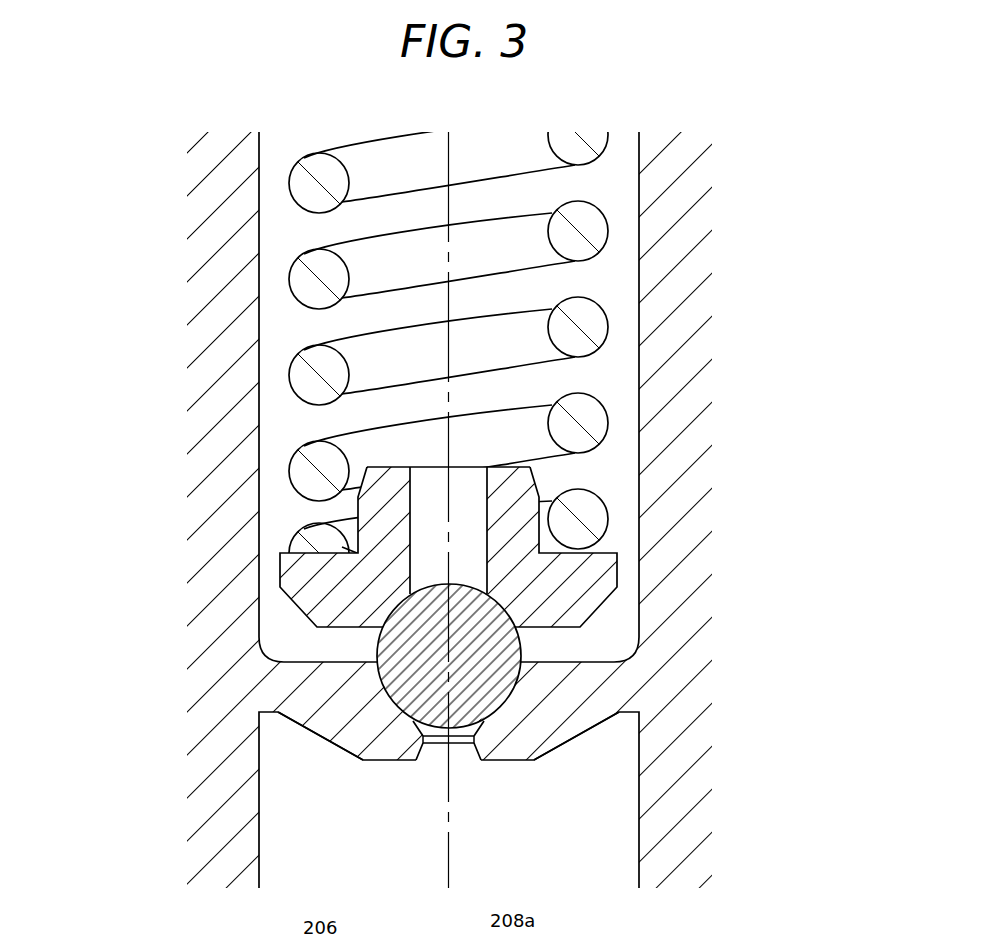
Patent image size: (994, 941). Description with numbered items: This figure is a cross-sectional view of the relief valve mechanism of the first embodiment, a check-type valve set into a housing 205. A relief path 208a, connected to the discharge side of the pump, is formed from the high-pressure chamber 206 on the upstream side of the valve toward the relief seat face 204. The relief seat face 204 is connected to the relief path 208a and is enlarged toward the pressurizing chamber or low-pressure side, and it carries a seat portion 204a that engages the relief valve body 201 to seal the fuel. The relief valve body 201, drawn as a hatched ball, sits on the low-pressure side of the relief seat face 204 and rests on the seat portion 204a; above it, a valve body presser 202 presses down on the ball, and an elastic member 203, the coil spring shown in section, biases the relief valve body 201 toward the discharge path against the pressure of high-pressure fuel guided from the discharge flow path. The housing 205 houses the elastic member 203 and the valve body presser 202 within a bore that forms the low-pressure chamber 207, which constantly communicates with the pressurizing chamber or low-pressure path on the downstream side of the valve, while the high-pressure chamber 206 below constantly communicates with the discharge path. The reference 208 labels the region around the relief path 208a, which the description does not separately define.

The relief valve body 201 is at (432, 637).
The valve body presser 202 is at (592, 577).
The elastic member 203 is at (313, 382).
The relief seat face 204 is at (460, 757).
The seat portion 204a is at (523, 760).
The housing 205 is at (672, 295).
The high-pressure chamber 206 is at (322, 907).
The low-pressure chamber 207 is at (615, 187).
The communication hole 208 is at (477, 736).
The relief path 208a is at (508, 905).